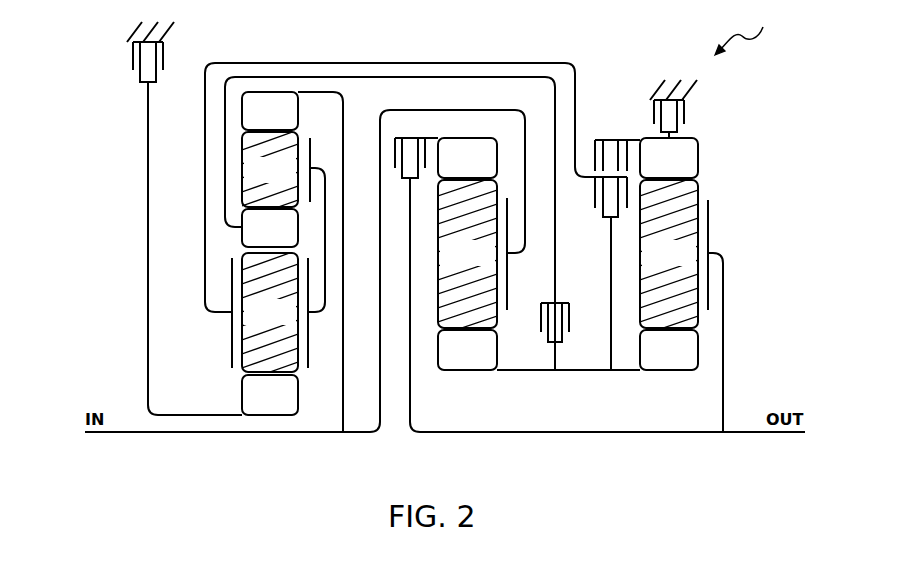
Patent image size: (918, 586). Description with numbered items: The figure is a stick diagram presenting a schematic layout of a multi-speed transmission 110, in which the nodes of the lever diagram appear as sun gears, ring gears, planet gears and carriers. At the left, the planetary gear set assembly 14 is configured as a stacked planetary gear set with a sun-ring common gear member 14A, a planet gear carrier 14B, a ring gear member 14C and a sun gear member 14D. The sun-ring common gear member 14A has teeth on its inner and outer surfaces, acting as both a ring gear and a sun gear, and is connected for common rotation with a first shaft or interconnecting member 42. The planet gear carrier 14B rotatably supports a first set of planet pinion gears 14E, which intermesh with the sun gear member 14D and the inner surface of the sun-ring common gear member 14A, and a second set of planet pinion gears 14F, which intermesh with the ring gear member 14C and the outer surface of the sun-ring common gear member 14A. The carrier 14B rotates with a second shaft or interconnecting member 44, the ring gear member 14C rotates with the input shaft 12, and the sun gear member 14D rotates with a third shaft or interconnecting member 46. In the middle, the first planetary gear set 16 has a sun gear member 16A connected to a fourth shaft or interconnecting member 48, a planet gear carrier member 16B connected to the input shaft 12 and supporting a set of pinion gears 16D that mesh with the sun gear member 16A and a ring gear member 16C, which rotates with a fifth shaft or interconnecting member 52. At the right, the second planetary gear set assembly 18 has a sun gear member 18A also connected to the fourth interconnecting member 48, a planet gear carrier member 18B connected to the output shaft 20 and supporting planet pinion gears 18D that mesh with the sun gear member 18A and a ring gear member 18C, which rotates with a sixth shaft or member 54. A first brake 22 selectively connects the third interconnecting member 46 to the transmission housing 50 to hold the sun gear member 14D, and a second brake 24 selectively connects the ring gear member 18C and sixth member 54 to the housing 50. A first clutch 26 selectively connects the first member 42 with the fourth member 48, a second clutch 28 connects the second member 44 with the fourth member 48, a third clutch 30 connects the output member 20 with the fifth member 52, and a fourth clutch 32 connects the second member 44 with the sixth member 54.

The multi-speed transmission 110 is at (751, 29).
The input shaft 12 is at (346, 147).
The planetary gear set assembly 14 is at (270, 289).
The sun-ring common gear member 14A is at (252, 239).
The planet gear carrier 14B is at (312, 140).
The ring gear member 14C is at (252, 122).
The sun gear member 14D is at (252, 406).
The first set of planet pinion gears 14E is at (252, 323).
The second set of planet pinion gears 14F is at (252, 181).
The first planetary gear set 16 is at (470, 312).
The sun gear member 16A is at (449, 361).
The planet gear carrier member 16B is at (508, 302).
The ring gear member 16C is at (449, 169).
The set of pinion gears 16D is at (449, 264).
The second planetary gear set assembly 18 is at (668, 312).
The sun gear member 18A is at (651, 361).
The planet gear carrier member 18B is at (708, 232).
The ring gear member 18C is at (651, 169).
The set of planet pinion gears 18D is at (651, 264).
The output shaft 20 is at (785, 434).
The first brake 22 is at (133, 65).
The second brake 24 is at (690, 118).
The first clutch 26 is at (570, 320).
The second clutch 28 is at (595, 192).
The third clutch 30 is at (395, 148).
The fourth clutch 32 is at (594, 155).
The first shaft or interconnecting member 42 is at (399, 64).
The second shaft or interconnecting member 44 is at (513, 76).
The third shaft or interconnecting member 46 is at (145, 195).
The fourth shaft or interconnecting member 48 is at (567, 372).
The transmission housing 50 is at (133, 33).
The fifth shaft or interconnecting member 52 is at (433, 138).
The sixth shaft or interconnecting member 54 is at (633, 138).